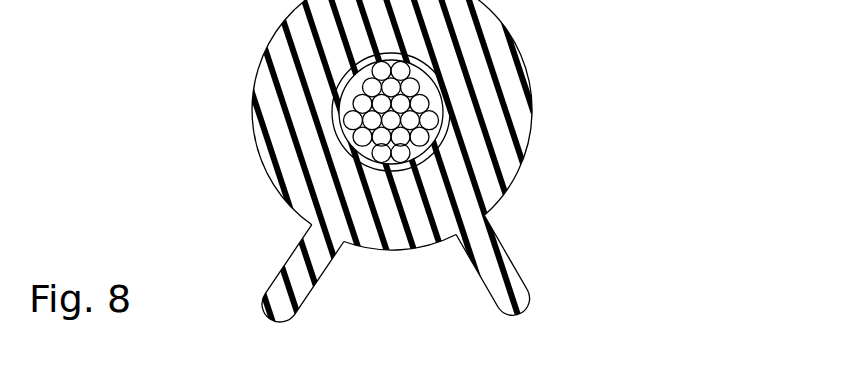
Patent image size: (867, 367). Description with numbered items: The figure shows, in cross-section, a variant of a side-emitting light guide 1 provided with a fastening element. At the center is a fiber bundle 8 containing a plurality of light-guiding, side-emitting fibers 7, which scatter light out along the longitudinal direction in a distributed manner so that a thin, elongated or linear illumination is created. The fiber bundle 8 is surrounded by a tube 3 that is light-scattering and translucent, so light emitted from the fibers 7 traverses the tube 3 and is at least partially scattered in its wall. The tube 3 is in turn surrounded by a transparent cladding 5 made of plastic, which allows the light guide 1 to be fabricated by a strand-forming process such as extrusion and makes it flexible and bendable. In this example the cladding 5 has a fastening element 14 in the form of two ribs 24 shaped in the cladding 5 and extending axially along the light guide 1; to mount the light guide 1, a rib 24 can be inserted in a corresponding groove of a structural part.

The side-emitting light guide 1 is at (169, 90).
The tube 3 is at (389, 152).
The cladding 5 is at (533, 118).
The side-emitting fibers 7 is at (370, 133).
The fiber bundle 8 is at (347, 149).
The fastening element 14 is at (533, 280).
The rib 24 is at (303, 273).